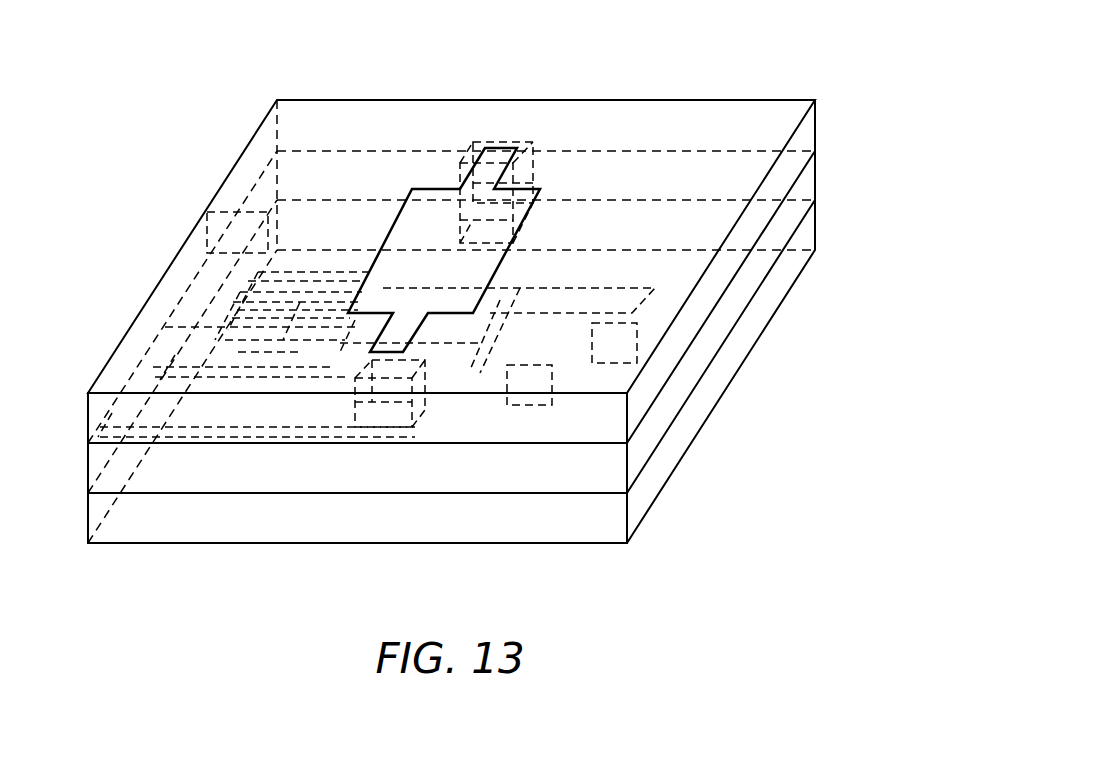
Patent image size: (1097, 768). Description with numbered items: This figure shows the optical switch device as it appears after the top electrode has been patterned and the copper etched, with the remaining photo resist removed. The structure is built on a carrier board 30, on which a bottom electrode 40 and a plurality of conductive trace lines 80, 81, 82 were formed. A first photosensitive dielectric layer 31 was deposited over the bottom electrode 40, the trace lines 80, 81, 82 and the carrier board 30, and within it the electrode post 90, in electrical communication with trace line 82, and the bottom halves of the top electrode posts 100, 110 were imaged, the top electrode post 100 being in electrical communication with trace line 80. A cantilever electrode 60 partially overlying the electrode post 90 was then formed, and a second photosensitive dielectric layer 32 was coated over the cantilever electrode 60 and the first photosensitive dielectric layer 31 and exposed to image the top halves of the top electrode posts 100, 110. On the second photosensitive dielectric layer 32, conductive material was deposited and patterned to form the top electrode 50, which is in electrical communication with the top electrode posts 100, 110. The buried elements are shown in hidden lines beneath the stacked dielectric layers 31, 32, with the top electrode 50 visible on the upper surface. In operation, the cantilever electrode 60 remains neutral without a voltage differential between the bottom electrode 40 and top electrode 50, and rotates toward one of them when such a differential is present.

The carrier board 30 is at (653, 475).
The first photosensitive dielectric layer 31 is at (673, 402).
The second photosensitive dielectric layer 32 is at (692, 328).
The bottom electrode 40 is at (512, 340).
The top electrode 50 is at (485, 273).
The cantilever electrode 60 is at (562, 300).
The conductive trace line 80 is at (98, 416).
The conductive trace line 81 is at (147, 357).
The conductive trace line 82 is at (167, 322).
The electrode post 90 is at (237, 232).
The top electrode post 100 is at (428, 378).
The top electrode post 110 is at (545, 163).